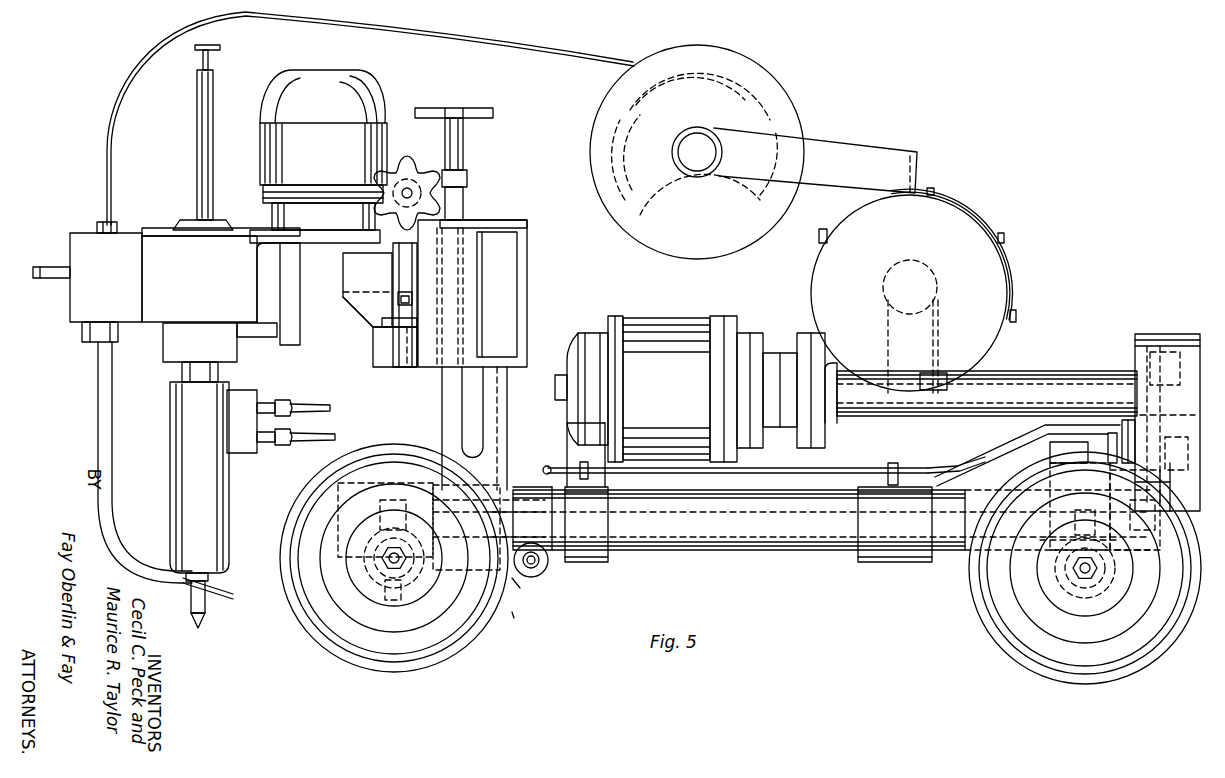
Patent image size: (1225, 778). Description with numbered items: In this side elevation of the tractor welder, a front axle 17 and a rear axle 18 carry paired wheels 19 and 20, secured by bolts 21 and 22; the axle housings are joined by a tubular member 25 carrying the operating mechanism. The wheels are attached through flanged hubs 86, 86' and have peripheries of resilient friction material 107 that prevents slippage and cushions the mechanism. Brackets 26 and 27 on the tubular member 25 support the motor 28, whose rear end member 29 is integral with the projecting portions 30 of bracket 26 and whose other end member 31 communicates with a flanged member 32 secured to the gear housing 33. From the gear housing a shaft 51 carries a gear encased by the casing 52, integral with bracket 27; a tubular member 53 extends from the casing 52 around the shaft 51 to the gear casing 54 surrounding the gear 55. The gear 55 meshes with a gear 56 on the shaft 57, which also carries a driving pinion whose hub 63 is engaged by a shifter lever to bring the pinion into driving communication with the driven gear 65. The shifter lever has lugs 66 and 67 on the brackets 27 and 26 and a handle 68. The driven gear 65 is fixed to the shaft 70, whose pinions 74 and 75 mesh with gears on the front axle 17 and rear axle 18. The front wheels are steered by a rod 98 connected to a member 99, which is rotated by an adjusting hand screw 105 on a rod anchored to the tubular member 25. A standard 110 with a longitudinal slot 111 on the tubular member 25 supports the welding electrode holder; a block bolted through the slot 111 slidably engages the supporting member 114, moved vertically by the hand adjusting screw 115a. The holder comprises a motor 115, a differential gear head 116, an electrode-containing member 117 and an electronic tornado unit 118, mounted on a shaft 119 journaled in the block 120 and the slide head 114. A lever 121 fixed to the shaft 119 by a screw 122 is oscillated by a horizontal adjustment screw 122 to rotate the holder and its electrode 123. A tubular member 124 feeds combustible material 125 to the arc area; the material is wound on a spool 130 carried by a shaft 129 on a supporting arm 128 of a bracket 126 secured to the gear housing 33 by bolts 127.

The front axle 17 is at (385, 560).
The rear axle 18 is at (1075, 576).
The paired wheels 19 is at (406, 645).
The paired wheels 20 is at (1072, 650).
The bolts 21 is at (404, 565).
The bolts 22 is at (1100, 576).
The tubular member 25 is at (795, 555).
The bracket 26 is at (597, 562).
The bracket 27 is at (900, 562).
The motor 28 is at (655, 330).
The end member 29 is at (592, 334).
The projecting portions 30 is at (566, 436).
The end member 31 is at (745, 334).
The circumferentially flanged member 32 is at (803, 334).
The gear housing 33 is at (945, 210).
The shaft 51 is at (1075, 382).
The casing 52 is at (893, 427).
The tubular member 53 is at (1030, 372).
The gear casing 54 is at (1192, 360).
The gear 55 is at (1165, 355).
The gear 56 is at (1178, 426).
The shaft 57 is at (1186, 457).
The hub 63 is at (1108, 440).
The driven gear 65 is at (1142, 572).
The lug 66 is at (888, 468).
The lug 67 is at (575, 462).
The handle 68 is at (543, 468).
The shaft 70 is at (688, 525).
The pinion 74 is at (375, 515).
The pinion 75 is at (1075, 545).
The flanged hub 86 is at (1040, 625).
The flanged hub 86' is at (324, 592).
The rod 98 is at (521, 595).
The member 99 is at (517, 627).
The adjusting hand screw 105 is at (538, 577).
The resilient friction material 107 is at (356, 658).
The standard 110 is at (440, 398).
The longitudinal slot 111 is at (478, 392).
The supporting member 114 is at (398, 342).
The motor 115 is at (283, 96).
The hand adjusting screw 115a is at (462, 158).
The differential gear head 116 is at (162, 300).
The electrode-containing member 117 is at (198, 165).
The electronic tornado unit 118 is at (176, 474).
The shaft 119 is at (398, 298).
The block 120 is at (372, 316).
The lever 121 is at (404, 252).
The adjustment screw 122 is at (400, 160).
The electrode 123 is at (200, 604).
The tubular member 124 is at (96, 382).
The combustible material 125 is at (106, 194).
The bracket 126 is at (990, 230).
The bolts 127 is at (1014, 317).
The supporting arm 128 is at (868, 158).
The shaft 129 is at (696, 153).
The spool 130 is at (760, 76).